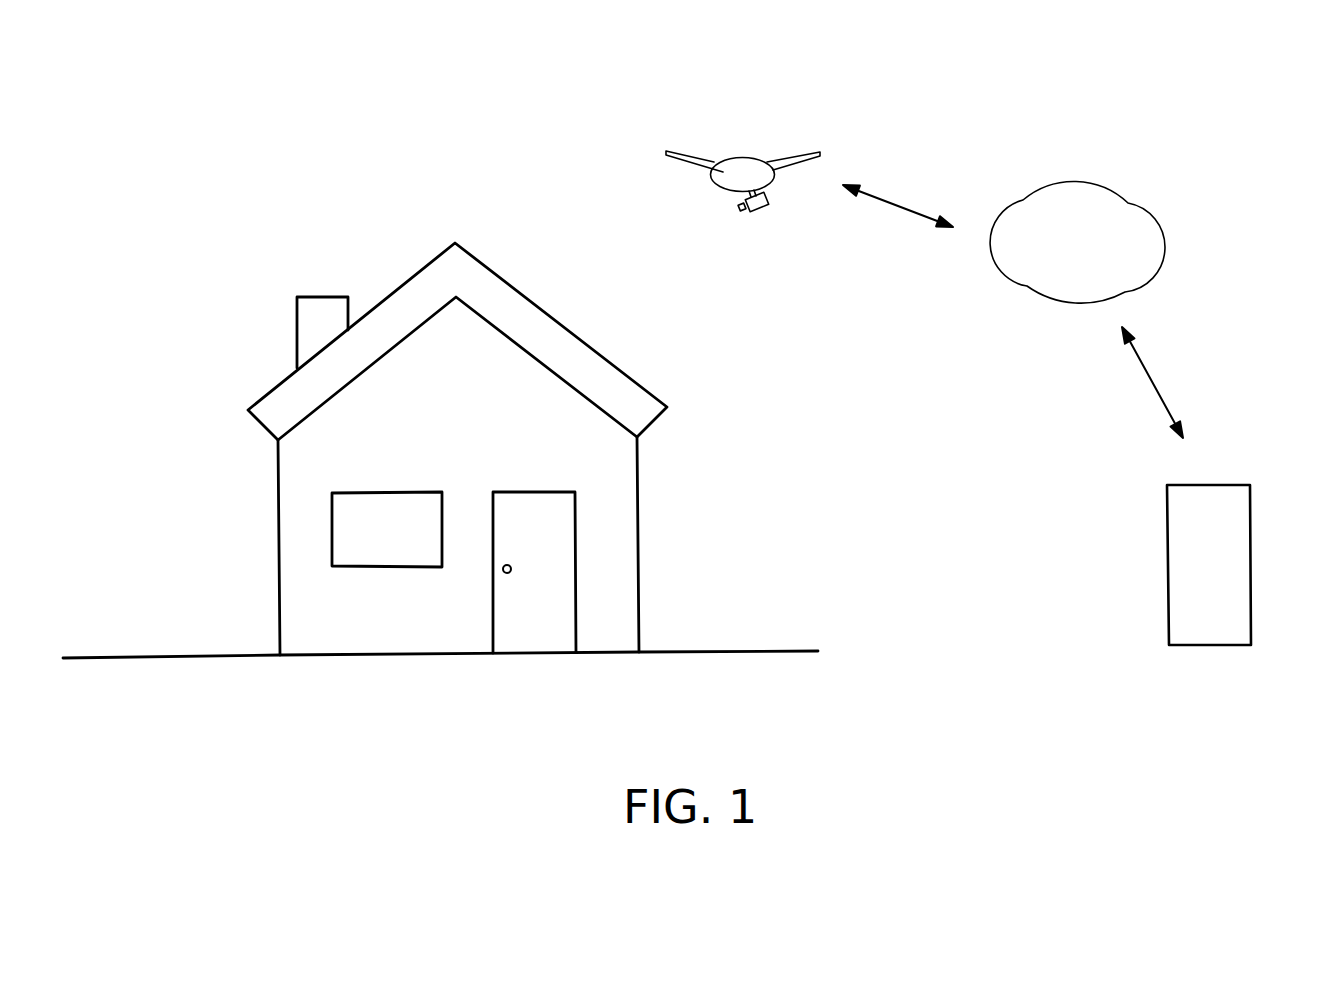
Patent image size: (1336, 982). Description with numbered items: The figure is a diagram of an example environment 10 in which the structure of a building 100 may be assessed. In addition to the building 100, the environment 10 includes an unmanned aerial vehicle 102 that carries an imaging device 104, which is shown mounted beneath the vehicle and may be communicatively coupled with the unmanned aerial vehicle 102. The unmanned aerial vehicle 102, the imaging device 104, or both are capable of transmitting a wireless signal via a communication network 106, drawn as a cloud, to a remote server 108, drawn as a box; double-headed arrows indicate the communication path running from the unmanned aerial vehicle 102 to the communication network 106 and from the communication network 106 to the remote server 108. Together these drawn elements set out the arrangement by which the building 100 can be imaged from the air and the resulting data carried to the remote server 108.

The environment 10 is at (238, 118).
The building 100 is at (637, 380).
The unmanned aerial vehicle (UAV) 102 is at (800, 150).
The imaging device 104 is at (772, 203).
The communication network 106 is at (1085, 183).
The remote server 108 is at (1225, 483).